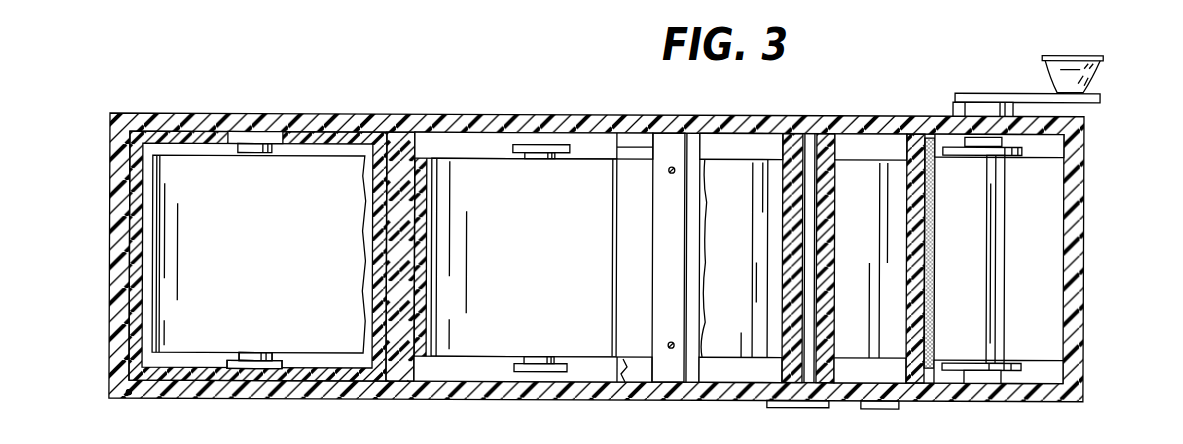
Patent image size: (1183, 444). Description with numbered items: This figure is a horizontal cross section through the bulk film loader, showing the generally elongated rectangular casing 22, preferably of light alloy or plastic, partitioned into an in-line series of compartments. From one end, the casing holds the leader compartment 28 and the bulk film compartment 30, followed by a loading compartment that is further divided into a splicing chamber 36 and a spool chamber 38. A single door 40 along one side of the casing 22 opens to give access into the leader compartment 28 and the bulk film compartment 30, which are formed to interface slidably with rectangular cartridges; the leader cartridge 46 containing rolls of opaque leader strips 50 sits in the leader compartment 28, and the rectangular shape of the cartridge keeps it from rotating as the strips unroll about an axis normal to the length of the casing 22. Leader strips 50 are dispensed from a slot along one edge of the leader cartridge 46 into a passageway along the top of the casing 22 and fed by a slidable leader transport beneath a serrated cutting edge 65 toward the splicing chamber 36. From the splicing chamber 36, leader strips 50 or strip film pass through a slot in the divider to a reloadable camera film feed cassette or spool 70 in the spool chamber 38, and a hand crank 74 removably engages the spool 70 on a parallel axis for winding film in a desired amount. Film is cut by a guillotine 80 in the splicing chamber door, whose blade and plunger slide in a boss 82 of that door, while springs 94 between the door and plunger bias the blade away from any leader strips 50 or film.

The casing 22 is at (401, 121).
The leader compartment 28 is at (151, 129).
The bulk film compartment 30 is at (498, 131).
The splicing chamber 36 is at (897, 256).
The spool chamber 38 is at (1045, 268).
The door 40 is at (575, 392).
The leader cartridge 46 is at (134, 219).
The leader strips 50 is at (288, 259).
The serrated cutting edge 65 is at (700, 368).
The spool 70 is at (1000, 327).
The hand crank 74 is at (1082, 78).
The guillotine 80 is at (142, 443).
The boss 82 is at (266, 443).
The springs 94 is at (293, 398).